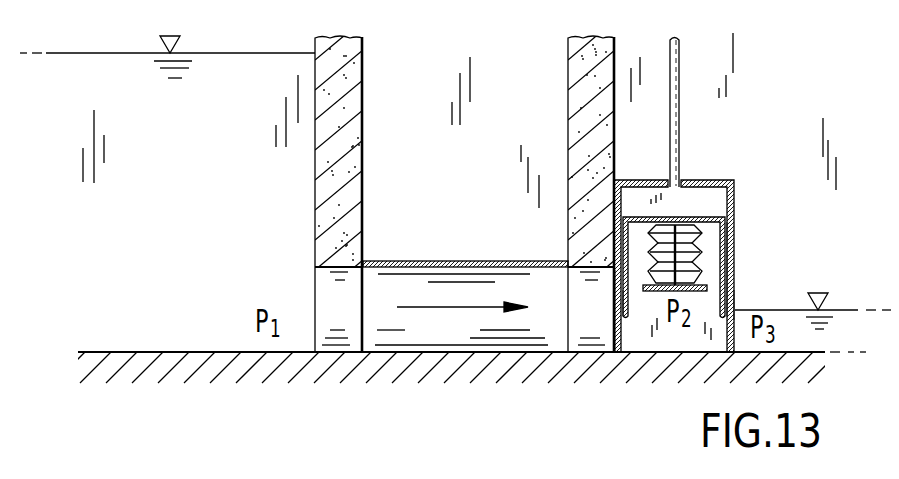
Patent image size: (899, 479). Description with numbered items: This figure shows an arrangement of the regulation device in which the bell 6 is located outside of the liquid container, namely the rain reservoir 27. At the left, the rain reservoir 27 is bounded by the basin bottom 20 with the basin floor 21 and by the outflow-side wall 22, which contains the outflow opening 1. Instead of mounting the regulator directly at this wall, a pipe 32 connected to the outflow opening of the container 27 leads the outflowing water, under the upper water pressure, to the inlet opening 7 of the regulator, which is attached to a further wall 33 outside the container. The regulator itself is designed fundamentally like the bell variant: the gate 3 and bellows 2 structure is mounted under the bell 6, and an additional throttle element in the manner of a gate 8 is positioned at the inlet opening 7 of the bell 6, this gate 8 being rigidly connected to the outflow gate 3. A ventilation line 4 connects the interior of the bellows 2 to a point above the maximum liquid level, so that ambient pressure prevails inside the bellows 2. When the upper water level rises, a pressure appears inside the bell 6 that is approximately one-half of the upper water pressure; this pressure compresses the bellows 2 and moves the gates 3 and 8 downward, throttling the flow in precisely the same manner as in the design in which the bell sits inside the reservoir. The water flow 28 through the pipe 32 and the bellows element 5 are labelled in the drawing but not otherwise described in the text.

The outflow opening 1 is at (733, 304).
The bellows 2 is at (731, 223).
The gate 3 is at (733, 282).
The ventilation line 4 is at (676, 97).
The bellows 5 is at (688, 232).
The bell 6 is at (646, 180).
The inlet opening 7 is at (612, 325).
The gate 8 is at (628, 297).
The basin bottom 20 is at (120, 362).
The basin floor 21 is at (200, 350).
The outflow-side wall 22 is at (357, 168).
The rain reservoir 27 is at (172, 186).
The flow 28 is at (471, 309).
The pipe 32 is at (460, 261).
The further wall 33 is at (577, 158).